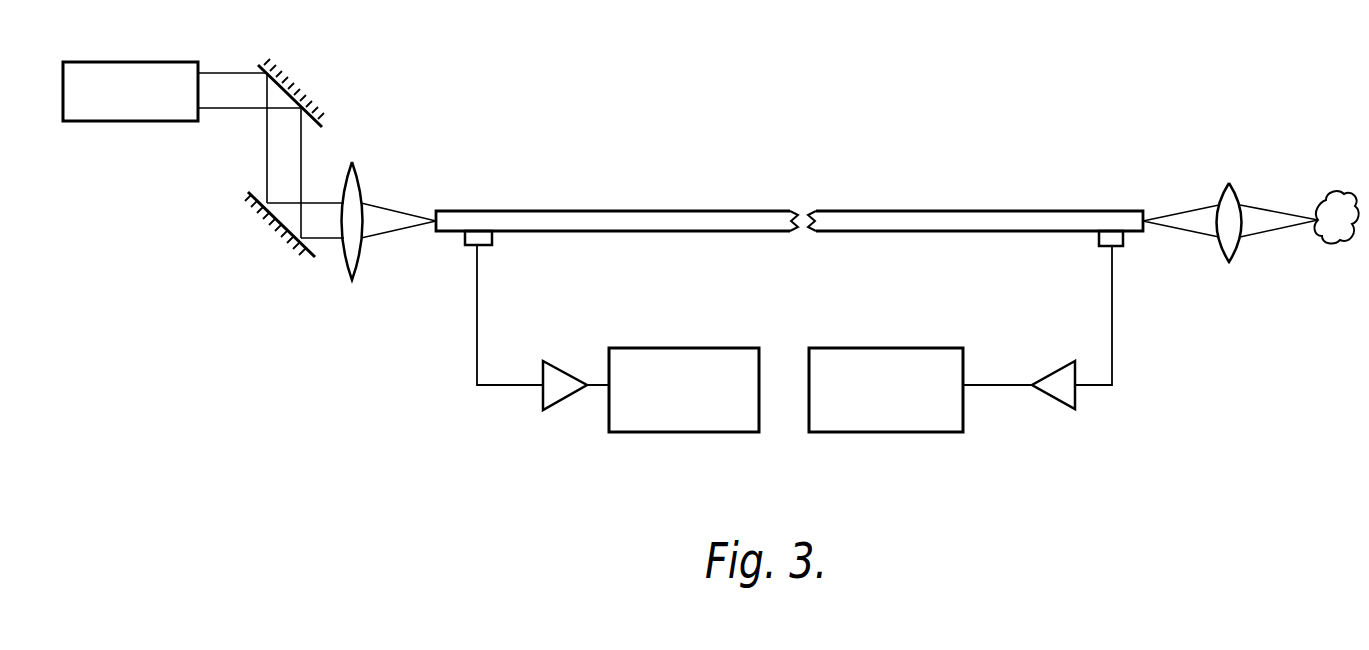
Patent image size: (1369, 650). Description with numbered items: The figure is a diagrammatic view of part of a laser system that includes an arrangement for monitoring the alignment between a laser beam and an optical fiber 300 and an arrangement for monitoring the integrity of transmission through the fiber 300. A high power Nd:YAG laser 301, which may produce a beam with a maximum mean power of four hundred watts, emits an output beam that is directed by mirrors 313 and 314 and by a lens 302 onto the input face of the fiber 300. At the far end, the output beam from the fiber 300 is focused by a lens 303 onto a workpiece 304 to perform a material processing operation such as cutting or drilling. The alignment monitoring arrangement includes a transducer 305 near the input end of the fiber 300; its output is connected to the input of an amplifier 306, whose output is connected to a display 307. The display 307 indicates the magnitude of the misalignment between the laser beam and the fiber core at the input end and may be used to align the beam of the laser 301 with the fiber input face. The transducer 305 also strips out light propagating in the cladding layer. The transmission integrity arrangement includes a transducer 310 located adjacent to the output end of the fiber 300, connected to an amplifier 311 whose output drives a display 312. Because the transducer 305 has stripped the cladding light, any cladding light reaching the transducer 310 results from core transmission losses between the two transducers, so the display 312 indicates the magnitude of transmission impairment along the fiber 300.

The optical fiber 300 is at (636, 220).
The Nd:YAG laser 301 is at (117, 105).
The lens 302 is at (357, 183).
The lens 303 is at (1228, 247).
The workpiece 304 is at (1337, 235).
The transducer 305 is at (473, 234).
The amplifier 306 is at (558, 390).
The display 307 is at (650, 417).
The transducer 310 is at (1098, 237).
The amplifier 311 is at (1057, 380).
The display 312 is at (848, 417).
The mirror 313 is at (290, 87).
The mirror 314 is at (280, 227).